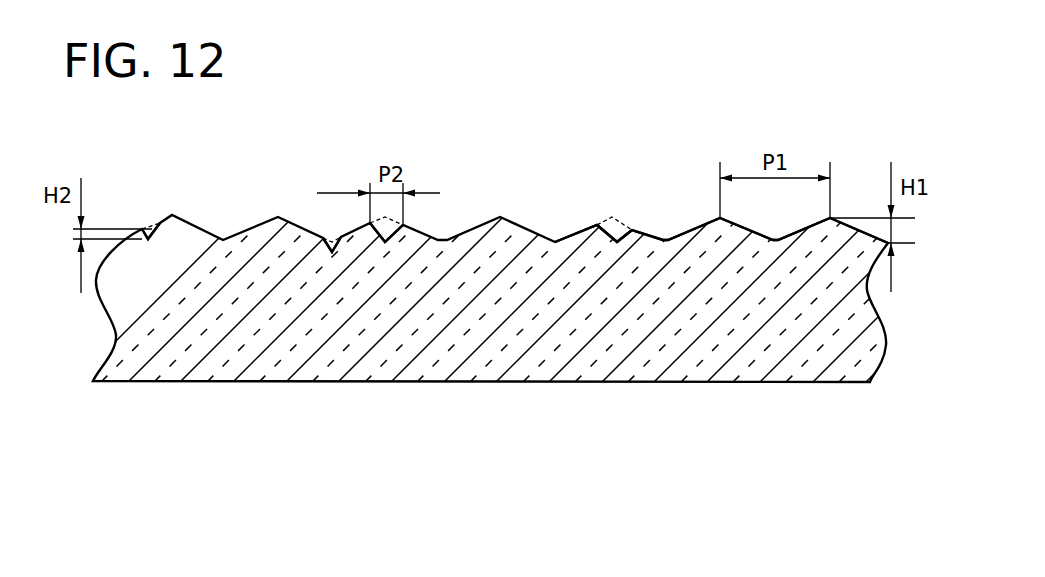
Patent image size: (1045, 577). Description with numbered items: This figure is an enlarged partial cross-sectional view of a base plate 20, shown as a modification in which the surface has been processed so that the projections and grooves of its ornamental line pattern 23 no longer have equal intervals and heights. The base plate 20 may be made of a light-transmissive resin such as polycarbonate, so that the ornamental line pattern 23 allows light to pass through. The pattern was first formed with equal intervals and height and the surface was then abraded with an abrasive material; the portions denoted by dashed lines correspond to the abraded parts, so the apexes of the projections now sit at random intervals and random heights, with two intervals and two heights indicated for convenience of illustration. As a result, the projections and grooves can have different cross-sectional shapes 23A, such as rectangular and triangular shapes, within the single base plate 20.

The base plate 20 is at (235, 381).
The ornamental line pattern 23 is at (701, 225).
The cross-sectional shapes 23A is at (180, 222).